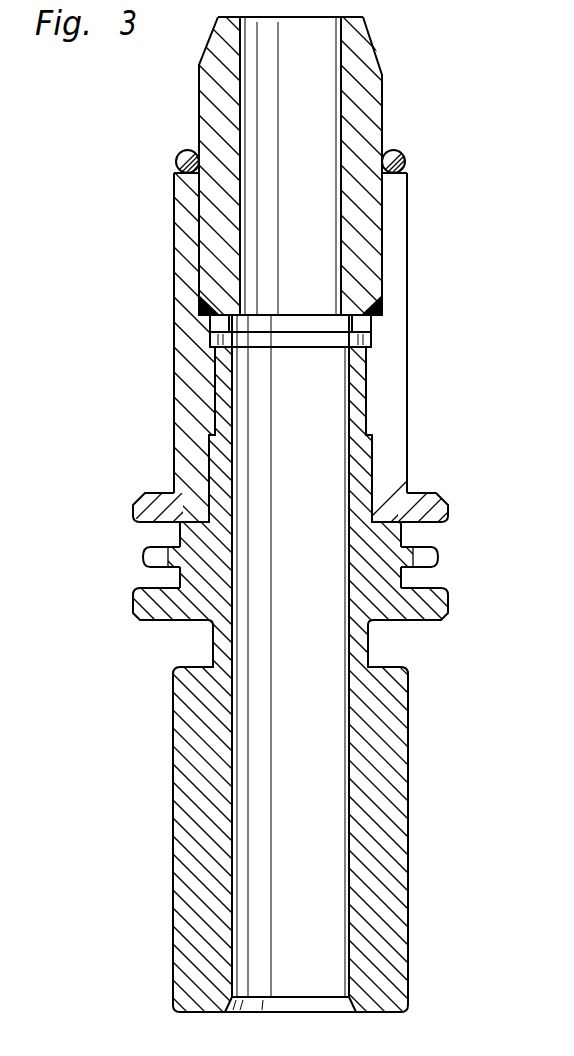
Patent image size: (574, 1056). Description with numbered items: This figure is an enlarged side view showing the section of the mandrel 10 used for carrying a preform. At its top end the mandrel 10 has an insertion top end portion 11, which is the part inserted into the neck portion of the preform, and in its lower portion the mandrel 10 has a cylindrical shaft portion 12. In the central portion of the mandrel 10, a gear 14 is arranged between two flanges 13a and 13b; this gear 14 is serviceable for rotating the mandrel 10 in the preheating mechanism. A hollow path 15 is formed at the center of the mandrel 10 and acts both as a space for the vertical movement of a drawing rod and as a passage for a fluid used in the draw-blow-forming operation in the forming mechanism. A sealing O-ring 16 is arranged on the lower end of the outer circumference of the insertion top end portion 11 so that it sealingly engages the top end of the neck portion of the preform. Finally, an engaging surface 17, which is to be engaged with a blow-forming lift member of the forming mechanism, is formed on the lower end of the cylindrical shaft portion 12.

The mandrel 10 is at (417, 366).
The insertion top end portion 11 is at (383, 62).
The cylindrical shaft portion 12 is at (409, 800).
The flange 13a is at (438, 500).
The flange 13b is at (442, 614).
The gear 14 is at (437, 556).
The hollow path 15 is at (345, 860).
The sealing O-ring 16 is at (406, 162).
The engaging surface 17 is at (380, 1013).